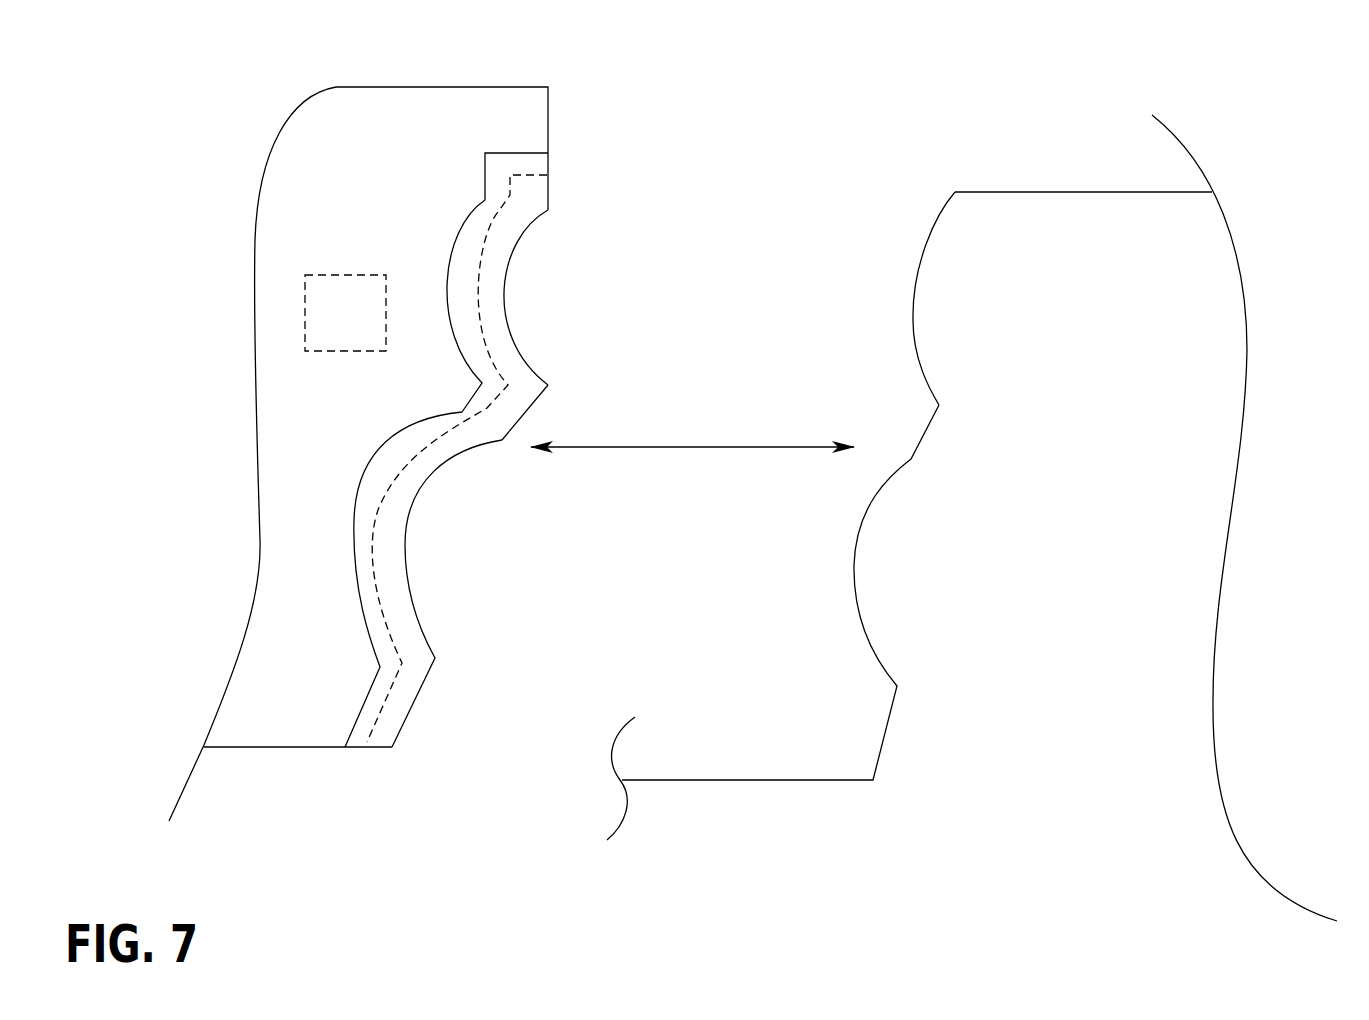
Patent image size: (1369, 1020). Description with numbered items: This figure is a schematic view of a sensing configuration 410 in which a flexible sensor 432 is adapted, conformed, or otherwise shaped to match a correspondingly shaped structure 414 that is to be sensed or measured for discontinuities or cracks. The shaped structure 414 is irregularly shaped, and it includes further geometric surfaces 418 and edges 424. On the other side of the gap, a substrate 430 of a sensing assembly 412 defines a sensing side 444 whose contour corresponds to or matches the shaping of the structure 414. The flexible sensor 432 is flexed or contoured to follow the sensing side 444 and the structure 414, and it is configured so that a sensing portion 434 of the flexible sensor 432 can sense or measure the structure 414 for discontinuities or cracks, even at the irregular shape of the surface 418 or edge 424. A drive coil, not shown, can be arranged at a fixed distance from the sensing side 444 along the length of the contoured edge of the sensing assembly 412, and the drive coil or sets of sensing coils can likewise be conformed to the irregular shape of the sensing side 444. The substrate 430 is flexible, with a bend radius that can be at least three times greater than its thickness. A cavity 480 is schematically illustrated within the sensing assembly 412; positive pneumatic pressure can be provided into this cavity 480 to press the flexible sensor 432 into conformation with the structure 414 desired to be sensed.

The sensing configuration 410 is at (769, 89).
The sensing assembly 412 is at (388, 233).
The shaped structure 414 is at (1106, 345).
The geometric surface 418 is at (882, 286).
The edge 424 is at (923, 249).
The substrate 430 is at (330, 155).
The flexible sensor 432 is at (422, 618).
The sensing portion 434 is at (492, 205).
The sensing side 444 is at (503, 282).
The cavity 480 is at (367, 323).